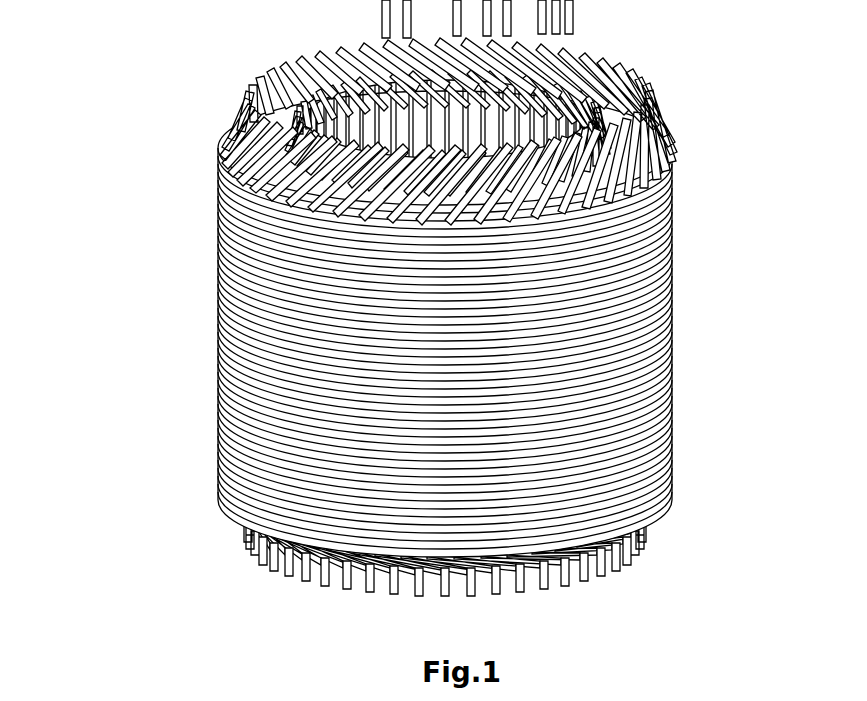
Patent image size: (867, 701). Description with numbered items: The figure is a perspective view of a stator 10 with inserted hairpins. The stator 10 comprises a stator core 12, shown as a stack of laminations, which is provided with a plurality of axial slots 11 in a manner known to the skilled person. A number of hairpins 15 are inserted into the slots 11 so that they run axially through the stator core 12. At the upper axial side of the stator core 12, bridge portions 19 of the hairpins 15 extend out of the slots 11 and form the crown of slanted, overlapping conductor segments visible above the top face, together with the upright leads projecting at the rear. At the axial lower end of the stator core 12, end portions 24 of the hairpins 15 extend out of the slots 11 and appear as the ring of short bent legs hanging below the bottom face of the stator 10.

The stator 10 is at (152, 343).
The axial slots 11 is at (298, 187).
The stator core 12 is at (232, 133).
The hairpins 15 is at (600, 195).
The bridge portions 19 is at (567, 172).
The end portions 24 is at (613, 573).